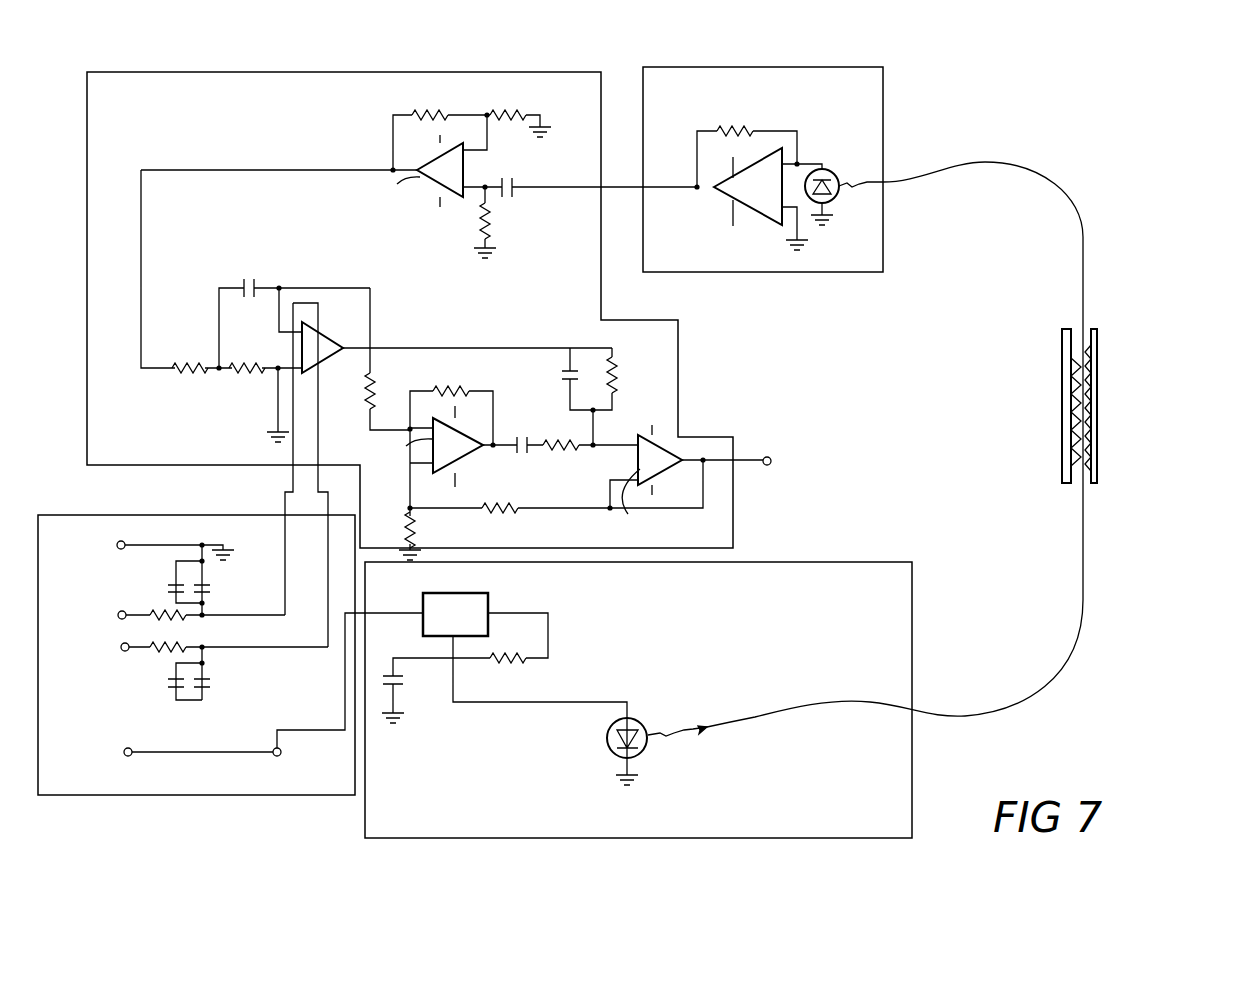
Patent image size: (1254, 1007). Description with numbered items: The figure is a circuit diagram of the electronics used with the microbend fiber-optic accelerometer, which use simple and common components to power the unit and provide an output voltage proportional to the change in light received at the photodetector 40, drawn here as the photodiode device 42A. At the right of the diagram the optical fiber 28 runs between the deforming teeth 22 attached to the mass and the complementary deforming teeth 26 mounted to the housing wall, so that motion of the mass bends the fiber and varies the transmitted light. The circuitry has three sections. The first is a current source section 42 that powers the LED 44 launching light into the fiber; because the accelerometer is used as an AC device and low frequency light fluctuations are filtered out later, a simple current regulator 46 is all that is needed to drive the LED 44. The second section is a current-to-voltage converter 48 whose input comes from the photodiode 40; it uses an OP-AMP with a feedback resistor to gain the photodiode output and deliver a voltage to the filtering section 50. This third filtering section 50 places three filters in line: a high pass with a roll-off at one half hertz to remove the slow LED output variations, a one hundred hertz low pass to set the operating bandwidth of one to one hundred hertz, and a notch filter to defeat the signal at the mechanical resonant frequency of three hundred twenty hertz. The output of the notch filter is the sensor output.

The filtering section 50 is at (160, 107).
The current-to-voltage converter 48 is at (813, 274).
The photodetector 40 is at (844, 166).
The photodiode CLD 42A is at (836, 200).
The optical fiber 28 is at (1083, 263).
The deforming teeth 22 is at (1098, 382).
The complimentary deforming teeth 26 is at (1062, 398).
The current regulator 46 is at (342, 798).
The current source section 42 is at (468, 769).
The LED 44 is at (608, 749).